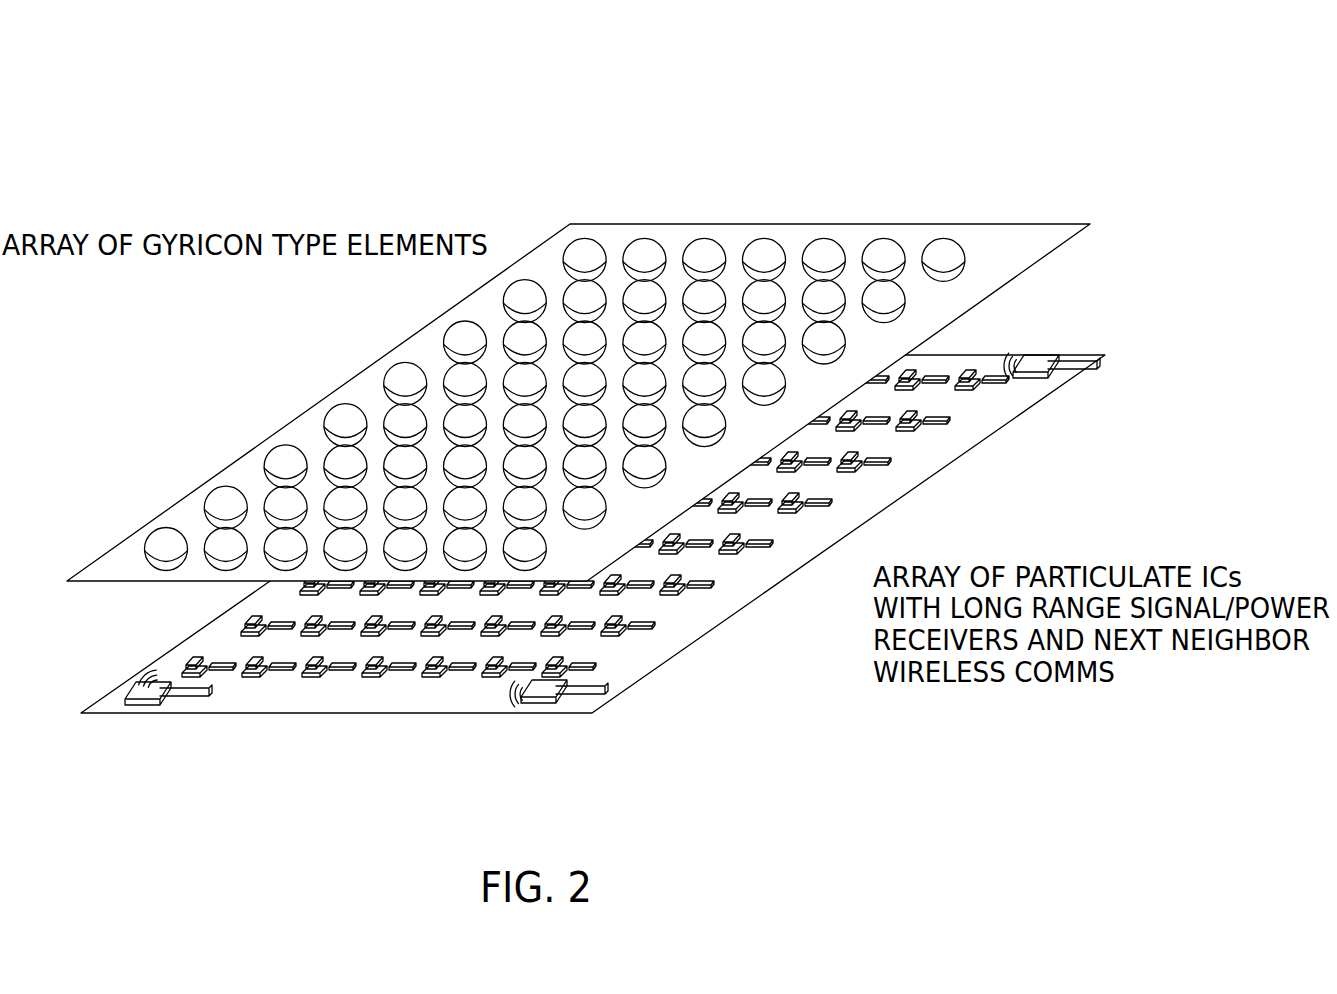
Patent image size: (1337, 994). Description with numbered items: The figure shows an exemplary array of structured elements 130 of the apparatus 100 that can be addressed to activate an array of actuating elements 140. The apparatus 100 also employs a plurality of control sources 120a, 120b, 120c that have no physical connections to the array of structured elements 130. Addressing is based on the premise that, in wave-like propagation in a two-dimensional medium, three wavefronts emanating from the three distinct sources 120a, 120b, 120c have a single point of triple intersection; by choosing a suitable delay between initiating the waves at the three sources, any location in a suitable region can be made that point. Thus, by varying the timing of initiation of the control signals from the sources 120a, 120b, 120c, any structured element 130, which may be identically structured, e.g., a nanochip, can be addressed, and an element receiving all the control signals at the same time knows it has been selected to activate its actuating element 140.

The system 100 is at (703, 77).
The control source 120a is at (1042, 363).
The control source 120b is at (548, 703).
The control source 120c is at (150, 705).
The structured element 130 is at (852, 472).
The actuating element 140 is at (886, 244).